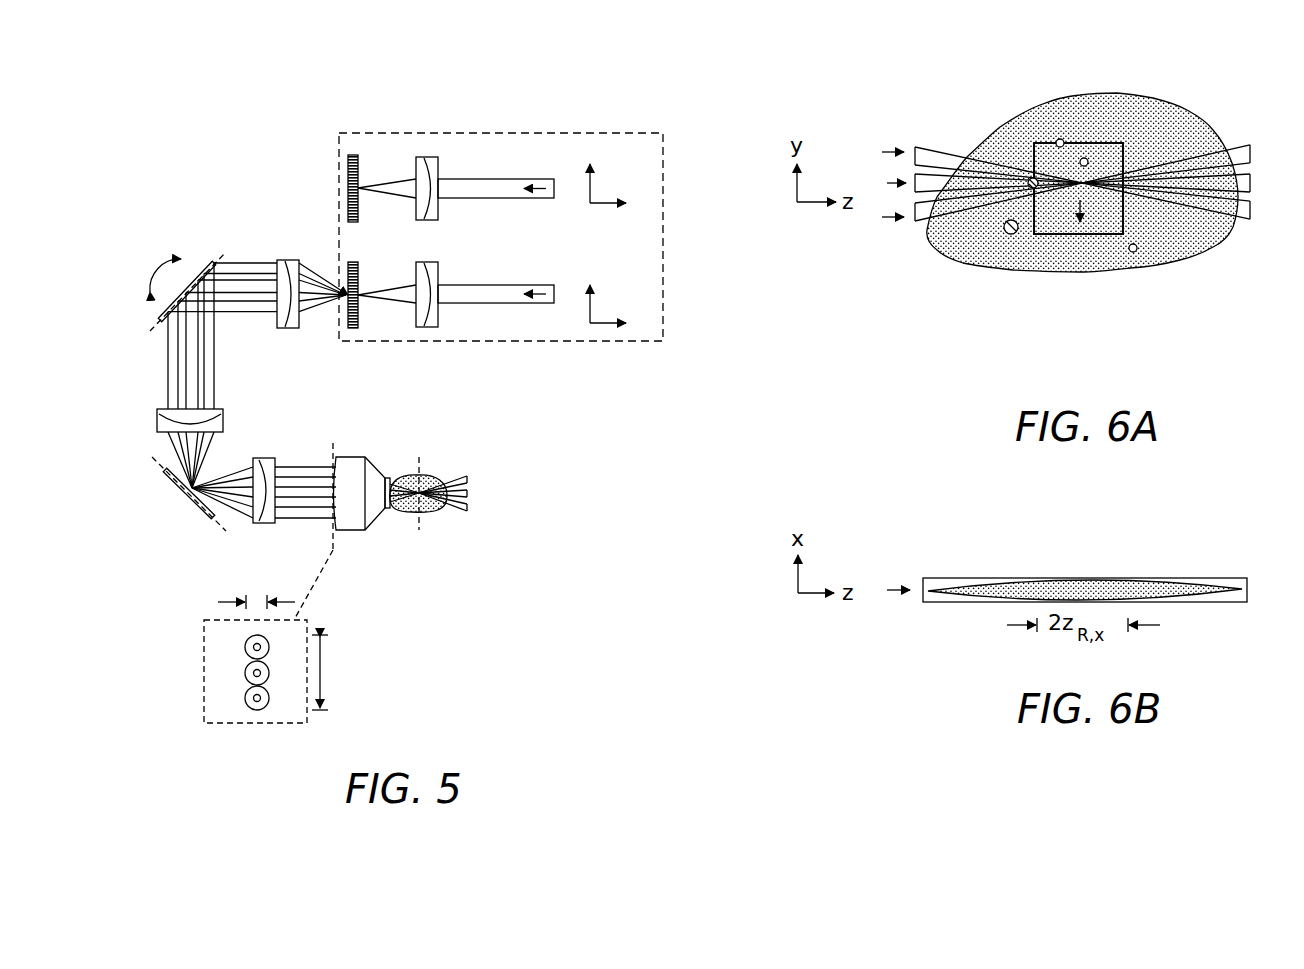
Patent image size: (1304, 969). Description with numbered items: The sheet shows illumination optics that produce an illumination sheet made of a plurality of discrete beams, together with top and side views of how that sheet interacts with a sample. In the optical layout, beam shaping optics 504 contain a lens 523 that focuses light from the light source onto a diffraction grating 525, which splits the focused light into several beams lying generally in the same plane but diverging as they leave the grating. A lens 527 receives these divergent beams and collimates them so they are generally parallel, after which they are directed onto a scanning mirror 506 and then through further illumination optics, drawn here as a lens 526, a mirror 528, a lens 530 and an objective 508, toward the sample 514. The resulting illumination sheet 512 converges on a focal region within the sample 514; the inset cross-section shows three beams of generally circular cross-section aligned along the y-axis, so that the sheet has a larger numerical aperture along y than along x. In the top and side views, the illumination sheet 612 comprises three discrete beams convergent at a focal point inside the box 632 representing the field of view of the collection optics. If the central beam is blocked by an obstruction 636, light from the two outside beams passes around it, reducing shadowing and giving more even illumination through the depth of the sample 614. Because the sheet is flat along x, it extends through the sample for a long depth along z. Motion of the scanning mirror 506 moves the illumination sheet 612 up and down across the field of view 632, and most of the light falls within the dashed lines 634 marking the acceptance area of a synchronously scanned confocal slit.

In FIG. 5, the beam shaping optics 504 is at (410, 133).
In FIG. 5, the scanning mirror 506 is at (165, 311).
In FIG. 5, the objective lens 508 is at (352, 457).
In FIG. 5, the illumination sheet 512 is at (218, 620).
In FIG. 5, the sample 514 is at (430, 474).
In FIG. 5, the lens 523 is at (430, 221).
In FIG. 5, the diffraction grating 525 is at (352, 222).
In FIG. 5, the lens 526 is at (157, 418).
In FIG. 5, the lens 527 is at (288, 260).
In FIG. 5, the mirror 528 is at (182, 493).
In FIG. 5, the lens 530 is at (262, 458).
In FIG. 6A, the illumination sheet 612 is at (938, 147).
In FIG. 6B, the illumination sheet 612 is at (942, 578).
In FIG. 6A, the sample 614 is at (1170, 96).
In FIG. 6B, the sample 614 is at (1158, 578).
In FIG. 6A, the box representing the field of view 632 is at (1068, 234).
In FIG. 6A, the dashed lines 634 is at (1135, 195).
In FIG. 6A, the obstruction 636 is at (1060, 139).